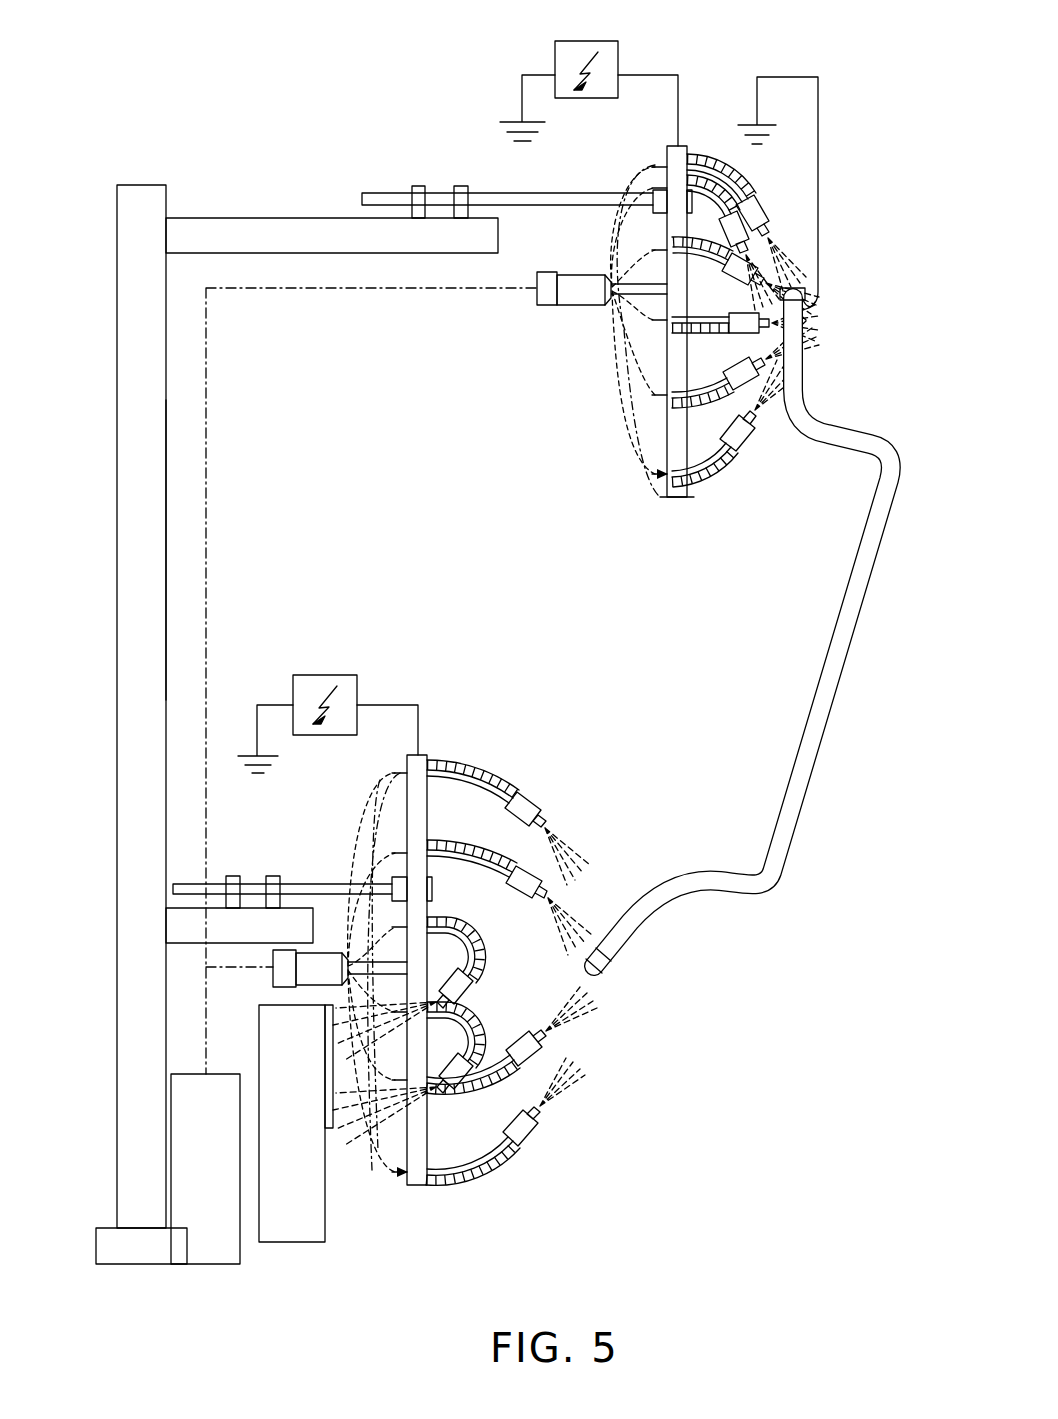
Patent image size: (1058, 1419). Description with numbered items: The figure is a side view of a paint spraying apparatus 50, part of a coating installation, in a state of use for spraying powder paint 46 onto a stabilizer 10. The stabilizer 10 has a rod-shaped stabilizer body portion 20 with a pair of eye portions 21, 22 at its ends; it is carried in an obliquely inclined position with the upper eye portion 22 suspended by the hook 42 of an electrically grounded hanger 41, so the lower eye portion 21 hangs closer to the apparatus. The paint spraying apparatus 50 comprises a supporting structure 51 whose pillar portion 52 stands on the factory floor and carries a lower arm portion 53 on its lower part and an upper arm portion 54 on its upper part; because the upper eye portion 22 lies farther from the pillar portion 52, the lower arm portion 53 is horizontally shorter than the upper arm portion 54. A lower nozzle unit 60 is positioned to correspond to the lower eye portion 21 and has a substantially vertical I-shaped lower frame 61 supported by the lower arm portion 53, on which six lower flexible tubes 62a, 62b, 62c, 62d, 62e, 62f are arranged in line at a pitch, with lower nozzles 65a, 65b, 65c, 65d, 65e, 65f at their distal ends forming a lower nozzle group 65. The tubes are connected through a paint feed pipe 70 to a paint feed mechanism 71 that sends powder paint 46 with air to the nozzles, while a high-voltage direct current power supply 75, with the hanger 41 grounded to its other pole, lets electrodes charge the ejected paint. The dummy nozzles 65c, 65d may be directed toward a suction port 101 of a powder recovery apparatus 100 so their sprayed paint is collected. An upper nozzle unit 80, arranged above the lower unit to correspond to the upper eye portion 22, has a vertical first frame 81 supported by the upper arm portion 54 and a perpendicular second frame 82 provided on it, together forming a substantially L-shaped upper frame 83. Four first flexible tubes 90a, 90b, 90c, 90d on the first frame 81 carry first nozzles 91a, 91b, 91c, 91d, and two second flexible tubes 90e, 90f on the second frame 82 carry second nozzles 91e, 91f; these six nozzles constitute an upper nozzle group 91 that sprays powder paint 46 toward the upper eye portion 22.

The stabilizer 10 is at (756, 536).
The stabilizer body portion 20 is at (860, 636).
The eye portion 21 is at (602, 970).
The eye portion 22 is at (806, 295).
The hanger 41 is at (820, 126).
The hook 42 is at (810, 310).
The powder paint 46 is at (780, 266).
The paint spraying apparatus 50 is at (471, 563).
The supporting structure 51 is at (200, 200).
The pillar portion 52 is at (168, 531).
The lower arm portion 53 is at (312, 884).
The upper arm portion 54 is at (575, 193).
The lower nozzle unit 60 is at (477, 976).
The lower frame 61 is at (412, 1186).
The lower flexible tube 62a is at (502, 761).
The lower flexible tube 62b is at (531, 846).
The lower flexible tube 62c is at (492, 949).
The lower flexible tube 62d is at (493, 1033).
The lower flexible tube 62e is at (532, 1088).
The lower flexible tube 62f is at (530, 1171).
The lower nozzle group 65 is at (560, 1160).
The lower nozzle 65a is at (535, 806).
The lower nozzle 65b is at (548, 890).
The dummy nozzle 65c is at (470, 975).
The dummy nozzle 65d is at (472, 1058).
The lower nozzle 65e is at (548, 1053).
The lower nozzle 65f is at (548, 1128).
The paint feed pipe 70 is at (206, 1060).
The paint feed mechanism 71 is at (215, 1250).
The high-voltage direct current power supply 75 is at (600, 40).
The upper nozzle unit 80 is at (712, 318).
The first frame 81 is at (655, 457).
The second frame 82 is at (685, 146).
The upper frame 83 is at (664, 498).
The first flexible tube 90a is at (748, 460).
The first flexible tube 90b is at (661, 393).
The first flexible tube 90c is at (726, 346).
The first flexible tube 90d is at (664, 270).
The second flexible tube 90e is at (746, 130).
The second flexible tube 90f is at (782, 133).
The upper nozzle group 91 is at (800, 192).
The first nozzle 91a is at (754, 440).
The first nozzle 91b is at (730, 378).
The first nozzle 91c is at (772, 330).
The first nozzle 91d is at (764, 283).
The second nozzle 91e is at (752, 230).
The second nozzle 91f is at (772, 236).
The powder recovery apparatus 100 is at (292, 1242).
The suction port 101 is at (338, 1130).